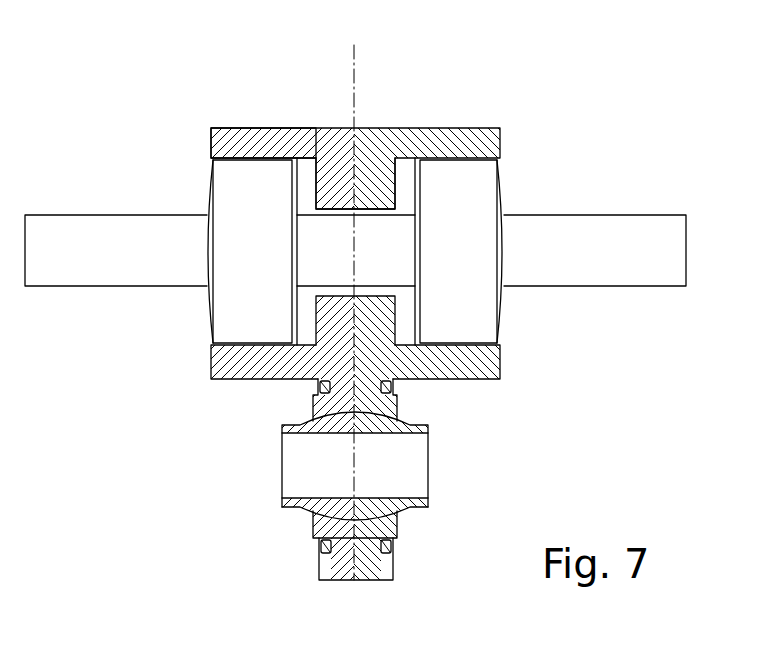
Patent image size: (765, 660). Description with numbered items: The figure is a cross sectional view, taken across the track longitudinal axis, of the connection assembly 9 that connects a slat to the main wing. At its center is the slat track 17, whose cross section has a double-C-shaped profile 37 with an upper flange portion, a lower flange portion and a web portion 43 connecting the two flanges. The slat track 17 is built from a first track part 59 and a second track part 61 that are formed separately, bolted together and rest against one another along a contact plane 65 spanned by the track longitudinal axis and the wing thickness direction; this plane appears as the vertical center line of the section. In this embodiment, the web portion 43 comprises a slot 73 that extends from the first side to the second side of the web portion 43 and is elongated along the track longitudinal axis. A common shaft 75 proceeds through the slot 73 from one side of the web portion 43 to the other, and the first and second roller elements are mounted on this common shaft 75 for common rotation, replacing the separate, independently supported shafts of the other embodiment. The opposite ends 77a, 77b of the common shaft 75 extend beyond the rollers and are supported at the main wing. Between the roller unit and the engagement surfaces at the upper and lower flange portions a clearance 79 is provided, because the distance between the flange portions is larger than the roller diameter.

The connection assembly 9 is at (360, 290).
The slat track 17 is at (420, 142).
The double-C-shaped profile 37 is at (543, 400).
The web portion 43 is at (372, 183).
The first track part 59 is at (252, 145).
The second track part 61 is at (482, 368).
The contact plane 65 is at (352, 82).
The slot 73 is at (383, 289).
The common shaft 75 is at (530, 235).
The first end of the common shaft 77a is at (63, 263).
The second end of the common shaft 77b is at (657, 265).
The clearance 79 is at (205, 345).